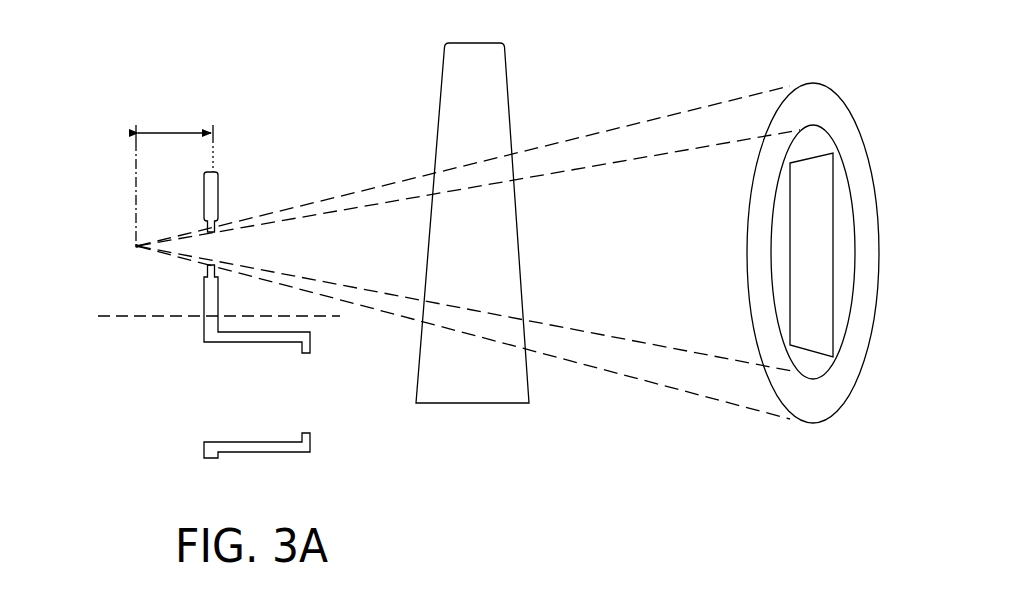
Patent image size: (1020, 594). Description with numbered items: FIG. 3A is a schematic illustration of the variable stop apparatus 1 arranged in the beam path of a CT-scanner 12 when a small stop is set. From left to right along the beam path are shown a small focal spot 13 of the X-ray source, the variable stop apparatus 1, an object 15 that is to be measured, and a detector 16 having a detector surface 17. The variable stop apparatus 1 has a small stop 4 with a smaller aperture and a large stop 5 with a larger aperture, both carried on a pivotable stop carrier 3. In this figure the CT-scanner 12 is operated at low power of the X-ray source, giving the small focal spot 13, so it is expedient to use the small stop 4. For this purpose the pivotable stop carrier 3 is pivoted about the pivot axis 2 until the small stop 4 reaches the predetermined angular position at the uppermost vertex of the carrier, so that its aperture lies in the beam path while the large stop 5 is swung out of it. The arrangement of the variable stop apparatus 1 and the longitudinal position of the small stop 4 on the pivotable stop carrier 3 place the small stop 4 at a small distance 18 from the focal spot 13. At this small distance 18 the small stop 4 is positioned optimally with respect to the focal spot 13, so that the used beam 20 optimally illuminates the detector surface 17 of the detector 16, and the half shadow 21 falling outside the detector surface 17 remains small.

The variable stop apparatus 1 is at (182, 354).
The pivot axis 2 is at (129, 323).
The pivotable stop carrier 3 is at (215, 178).
The small stop 4 is at (223, 244).
The large stop 5 is at (309, 393).
The CT-scanner 12 is at (84, 84).
The small focal spot 13 is at (128, 242).
The object 15 is at (485, 384).
The detector 16 is at (816, 430).
The detector surface 17 is at (832, 350).
The small distance 18 is at (164, 131).
The used beam 20 is at (672, 140).
The half shadow 21 is at (810, 105).